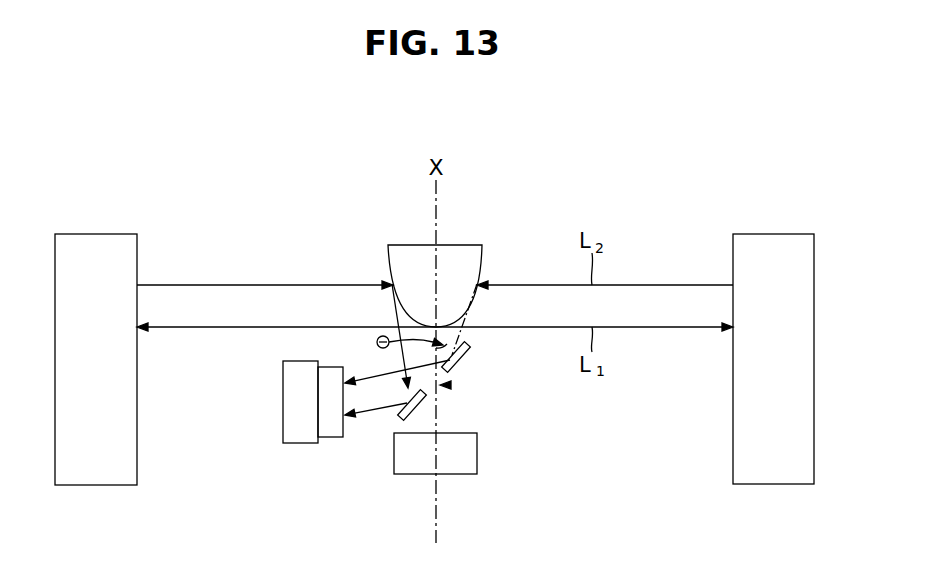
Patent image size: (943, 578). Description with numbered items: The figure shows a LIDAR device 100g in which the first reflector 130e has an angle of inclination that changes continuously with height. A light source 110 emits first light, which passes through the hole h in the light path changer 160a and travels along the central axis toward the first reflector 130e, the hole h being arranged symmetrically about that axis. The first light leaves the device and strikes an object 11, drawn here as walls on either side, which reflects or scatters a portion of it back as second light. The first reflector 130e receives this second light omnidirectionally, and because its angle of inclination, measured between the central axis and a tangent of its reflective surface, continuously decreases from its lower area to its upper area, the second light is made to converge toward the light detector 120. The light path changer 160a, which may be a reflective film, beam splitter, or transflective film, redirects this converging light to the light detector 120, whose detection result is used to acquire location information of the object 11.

The object 11 is at (97, 485).
The LIDAR device 100g is at (706, 184).
The first reflector 130e is at (452, 253).
The light path changer 160a is at (472, 355).
The hole h is at (451, 385).
The light source 110 is at (467, 455).
The light detector 120 is at (300, 433).